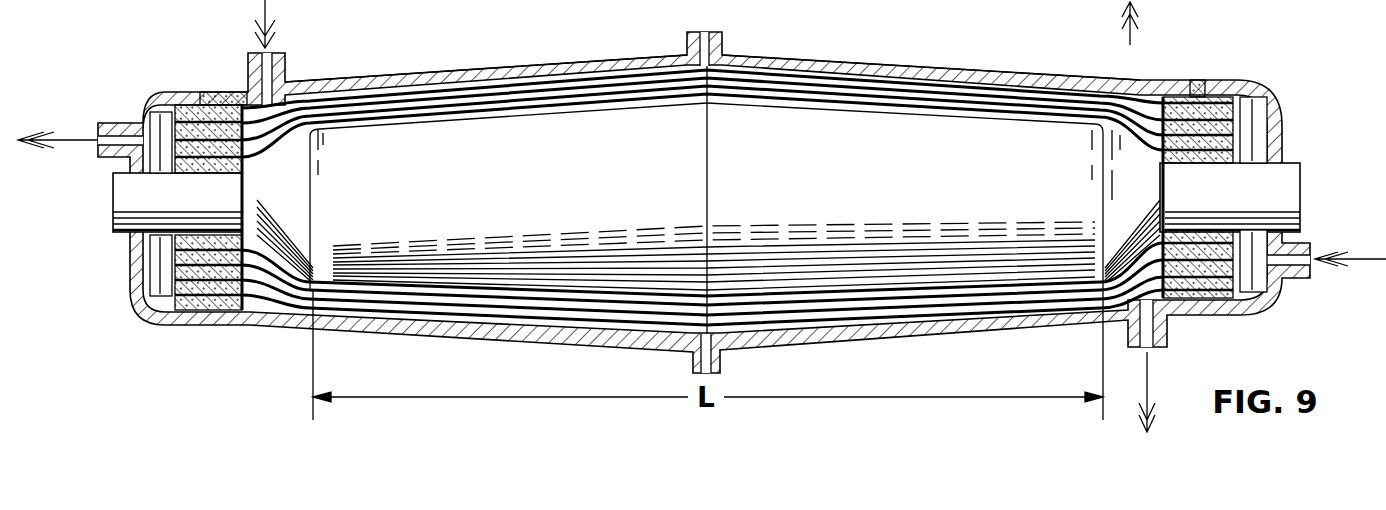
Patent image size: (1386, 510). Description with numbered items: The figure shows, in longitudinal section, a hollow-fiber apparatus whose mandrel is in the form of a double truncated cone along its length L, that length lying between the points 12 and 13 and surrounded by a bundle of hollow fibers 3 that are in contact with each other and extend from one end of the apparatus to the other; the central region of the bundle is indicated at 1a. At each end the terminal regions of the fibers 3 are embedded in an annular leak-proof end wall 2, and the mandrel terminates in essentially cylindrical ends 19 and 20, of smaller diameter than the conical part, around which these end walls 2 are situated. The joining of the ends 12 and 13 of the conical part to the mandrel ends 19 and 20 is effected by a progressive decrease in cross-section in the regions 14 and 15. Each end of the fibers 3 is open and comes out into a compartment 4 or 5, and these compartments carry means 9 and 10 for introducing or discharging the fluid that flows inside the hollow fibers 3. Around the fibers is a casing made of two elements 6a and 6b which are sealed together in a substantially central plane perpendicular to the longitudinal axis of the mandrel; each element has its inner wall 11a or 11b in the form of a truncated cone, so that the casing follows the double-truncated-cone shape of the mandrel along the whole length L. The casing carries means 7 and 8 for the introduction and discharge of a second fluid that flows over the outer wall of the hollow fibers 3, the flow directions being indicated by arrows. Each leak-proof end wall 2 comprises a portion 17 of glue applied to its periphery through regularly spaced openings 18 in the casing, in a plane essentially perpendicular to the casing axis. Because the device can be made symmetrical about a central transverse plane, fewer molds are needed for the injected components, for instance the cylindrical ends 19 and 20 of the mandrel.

The chamber 1a is at (512, 175).
The leak-proof end wall 2 is at (1240, 125).
The fibers 3 is at (840, 85).
The compartment 4 is at (1250, 140).
The compartment 5 is at (160, 258).
The casing element 6a is at (450, 78).
The casing element 6b is at (905, 70).
The means for introduction of fluid 7 is at (285, 55).
The means for discharge of fluid 8 is at (1147, 333).
The means for introduction or discharge of fluid 9 is at (1290, 285).
The means for introduction or discharge of fluid 10 is at (115, 125).
The inner wall 11a is at (585, 85).
The inner wall 11b is at (920, 80).
The end of the truncated-cone part 12 is at (302, 135).
The end of the truncated-cone part 13 is at (1100, 93).
The region of progressive decrease in cross-section 14 is at (287, 247).
The region of progressive decrease in cross-section 15 is at (1117, 143).
The portion of glue 17 is at (232, 100).
The openings 18 is at (203, 92).
The end of the mandrel 19 is at (125, 198).
The end of the mandrel 20 is at (1285, 178).